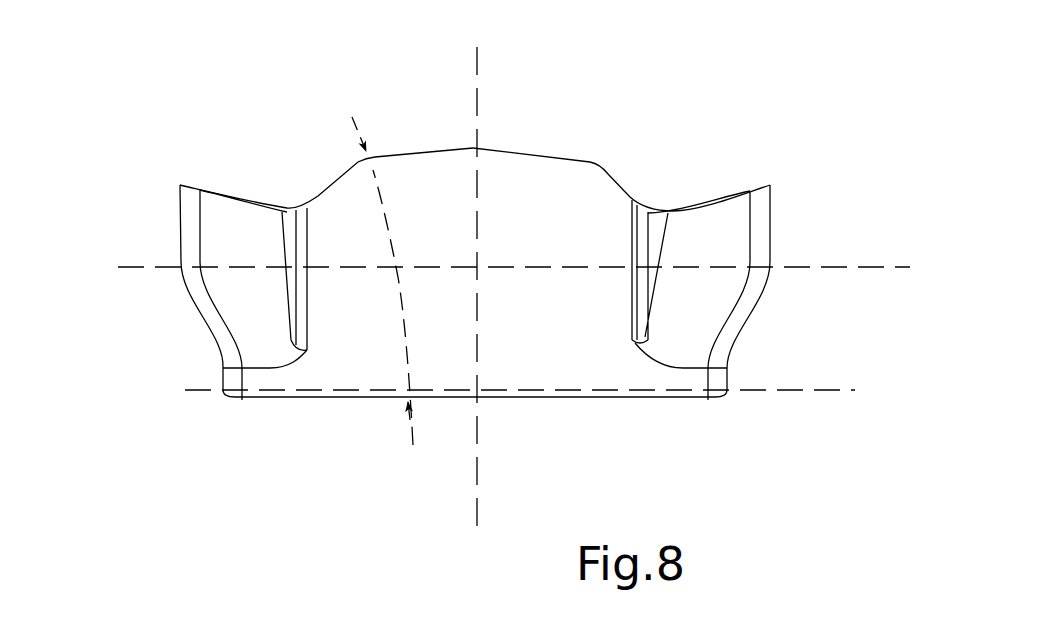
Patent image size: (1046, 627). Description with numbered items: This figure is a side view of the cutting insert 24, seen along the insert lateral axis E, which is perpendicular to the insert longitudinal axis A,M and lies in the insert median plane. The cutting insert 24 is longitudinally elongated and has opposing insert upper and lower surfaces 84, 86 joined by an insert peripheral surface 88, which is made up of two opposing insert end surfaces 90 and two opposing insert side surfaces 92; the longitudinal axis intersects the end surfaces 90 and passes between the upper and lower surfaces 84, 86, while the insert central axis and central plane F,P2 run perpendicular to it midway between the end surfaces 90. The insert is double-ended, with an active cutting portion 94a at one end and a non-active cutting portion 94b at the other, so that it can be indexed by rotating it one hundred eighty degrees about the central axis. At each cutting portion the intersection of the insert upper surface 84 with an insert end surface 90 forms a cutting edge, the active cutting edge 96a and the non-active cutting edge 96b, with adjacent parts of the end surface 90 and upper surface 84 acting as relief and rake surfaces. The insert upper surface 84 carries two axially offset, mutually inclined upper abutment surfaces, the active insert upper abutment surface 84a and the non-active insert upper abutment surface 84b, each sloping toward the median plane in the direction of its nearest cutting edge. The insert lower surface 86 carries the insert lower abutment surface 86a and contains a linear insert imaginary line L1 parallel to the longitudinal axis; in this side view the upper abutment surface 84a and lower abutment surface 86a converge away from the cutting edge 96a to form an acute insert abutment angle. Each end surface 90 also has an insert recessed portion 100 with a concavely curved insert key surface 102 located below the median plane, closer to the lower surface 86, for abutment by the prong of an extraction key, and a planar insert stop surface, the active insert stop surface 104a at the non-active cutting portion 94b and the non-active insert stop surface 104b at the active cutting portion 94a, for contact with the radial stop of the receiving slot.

The cutting insert 24 is at (471, 269).
The insert upper surface 84 is at (475, 147).
The active insert upper abutment surface 84a is at (418, 156).
The non-active insert upper abutment surface 84b is at (552, 159).
The insert lower surface 86 is at (469, 447).
The insert lower abutment surface 86a is at (597, 398).
The insert peripheral surface 88 is at (234, 294).
The insert end surface 90 is at (180, 209).
The insert side surface 92 is at (364, 350).
The active cutting portion 94a is at (714, 171).
The non-active cutting portion 94b is at (246, 181).
The active cutting edge 96a is at (771, 184).
The non-active cutting edge 96b is at (180, 183).
The insert recessed portion 100 is at (206, 369).
The insert key surface 102 is at (216, 349).
The active insert stop surface 104a is at (181, 238).
The non-active insert stop surface 104b is at (771, 251).
The insert lateral axis E is at (478, 268).
The insert central axis and insert central plane F,P2 is at (478, 122).
The insert longitudinal axis and insert median plane A,M is at (867, 266).
The insert imaginary line L1 is at (832, 390).